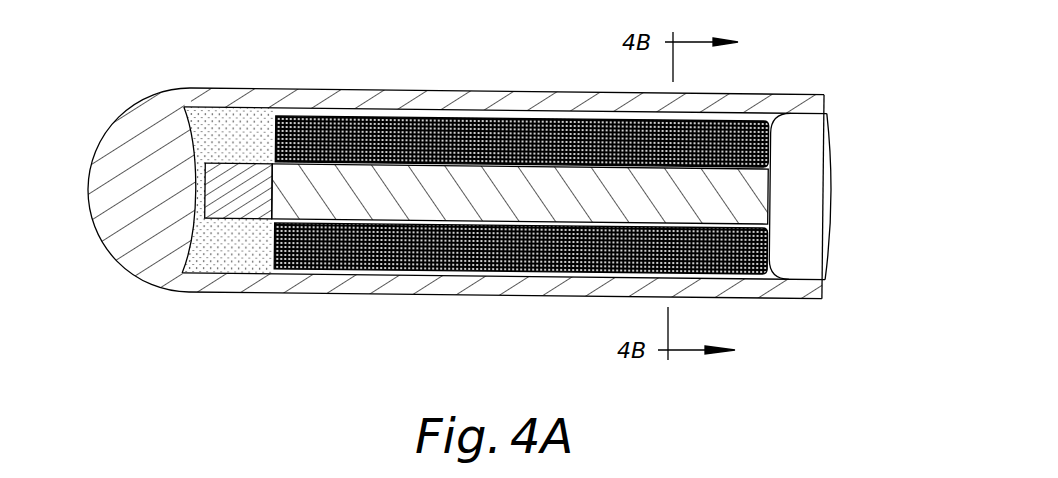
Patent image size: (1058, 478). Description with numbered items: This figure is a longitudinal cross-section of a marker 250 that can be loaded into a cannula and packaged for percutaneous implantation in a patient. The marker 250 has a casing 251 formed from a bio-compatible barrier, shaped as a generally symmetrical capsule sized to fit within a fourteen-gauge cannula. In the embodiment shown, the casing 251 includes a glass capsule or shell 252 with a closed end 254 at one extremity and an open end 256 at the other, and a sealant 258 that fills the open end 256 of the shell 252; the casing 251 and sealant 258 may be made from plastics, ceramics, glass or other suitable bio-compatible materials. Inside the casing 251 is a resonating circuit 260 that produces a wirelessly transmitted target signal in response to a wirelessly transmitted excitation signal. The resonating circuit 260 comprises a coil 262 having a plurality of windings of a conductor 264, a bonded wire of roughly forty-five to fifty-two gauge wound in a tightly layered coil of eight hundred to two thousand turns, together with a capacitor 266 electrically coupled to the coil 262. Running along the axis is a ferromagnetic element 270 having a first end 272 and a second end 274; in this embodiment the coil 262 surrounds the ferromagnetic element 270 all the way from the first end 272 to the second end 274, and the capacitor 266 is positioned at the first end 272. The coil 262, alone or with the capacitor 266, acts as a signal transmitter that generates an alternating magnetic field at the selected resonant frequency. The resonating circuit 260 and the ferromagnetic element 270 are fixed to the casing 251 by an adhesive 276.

The marker 250 is at (146, 310).
The casing 251 is at (492, 90).
The shell 252 is at (392, 288).
The closed end 254 is at (90, 178).
The open end 256 is at (837, 113).
The sealant 258 is at (820, 224).
The resonating circuit 260 is at (225, 232).
The coil 262 is at (782, 152).
The conductor 264 is at (771, 250).
The capacitor 266 is at (227, 183).
The ferromagnetic element 270 is at (690, 178).
The first end 272 is at (276, 185).
The second end 274 is at (770, 195).
The adhesive 276 is at (223, 258).